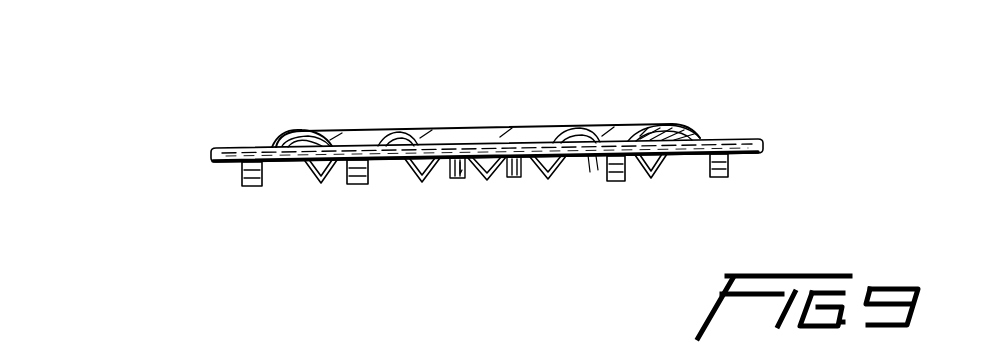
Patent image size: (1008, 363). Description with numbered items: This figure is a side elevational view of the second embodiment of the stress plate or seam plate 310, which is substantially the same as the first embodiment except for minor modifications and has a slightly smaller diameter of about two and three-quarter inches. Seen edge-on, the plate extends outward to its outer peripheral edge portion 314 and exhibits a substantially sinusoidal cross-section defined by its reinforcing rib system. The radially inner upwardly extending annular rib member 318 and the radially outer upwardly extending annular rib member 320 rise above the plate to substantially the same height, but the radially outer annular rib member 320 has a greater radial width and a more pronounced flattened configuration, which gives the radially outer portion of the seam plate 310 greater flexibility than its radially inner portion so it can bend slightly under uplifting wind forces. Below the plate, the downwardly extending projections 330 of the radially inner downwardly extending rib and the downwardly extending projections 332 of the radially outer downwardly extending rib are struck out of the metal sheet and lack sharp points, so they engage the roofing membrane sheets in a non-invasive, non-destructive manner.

The stress plate or seam plate 310 is at (465, 154).
The outer peripheral edge portion 314 is at (213, 158).
The radially inner upwardly extending annular rib member 318 is at (398, 128).
The radially outer upwardly extending annular rib member 320 is at (298, 130).
The downwardly extending projections 330 is at (356, 186).
The downwardly extending projections 332 is at (252, 188).